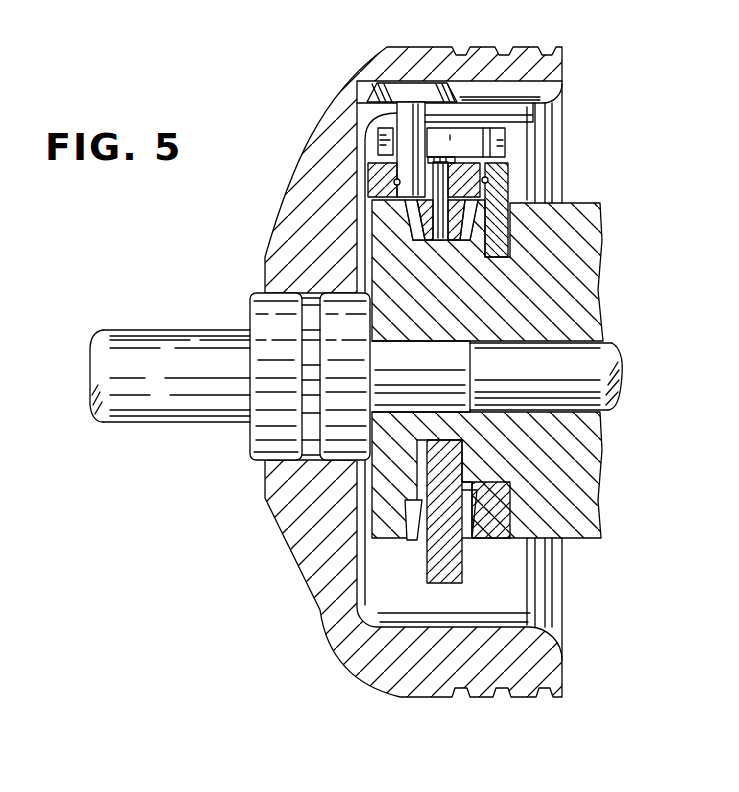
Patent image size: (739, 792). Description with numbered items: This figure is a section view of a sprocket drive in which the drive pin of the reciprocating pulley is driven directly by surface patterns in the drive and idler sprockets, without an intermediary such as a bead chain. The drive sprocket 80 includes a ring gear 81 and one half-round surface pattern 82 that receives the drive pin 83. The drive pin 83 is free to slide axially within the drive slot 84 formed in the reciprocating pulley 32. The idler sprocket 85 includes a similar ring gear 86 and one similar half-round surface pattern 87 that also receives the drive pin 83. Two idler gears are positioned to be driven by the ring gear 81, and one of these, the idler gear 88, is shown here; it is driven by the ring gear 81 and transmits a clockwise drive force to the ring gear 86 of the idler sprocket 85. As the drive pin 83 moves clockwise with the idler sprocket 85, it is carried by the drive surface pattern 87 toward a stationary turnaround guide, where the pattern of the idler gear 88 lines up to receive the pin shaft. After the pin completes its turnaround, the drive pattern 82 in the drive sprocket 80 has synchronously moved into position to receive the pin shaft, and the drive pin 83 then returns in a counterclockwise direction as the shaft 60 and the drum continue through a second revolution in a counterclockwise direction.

The reciprocating pulley 32 is at (420, 47).
The shaft 60 is at (172, 418).
The drive sprocket 80 is at (380, 263).
The ring gear 81 is at (413, 222).
The half-round surface pattern 82 is at (394, 181).
The drive pin 83 is at (397, 92).
The drive slot 84 is at (547, 90).
The idler sprocket 85 is at (512, 188).
The ring gear 86 is at (490, 226).
The half-round surface pattern 87 is at (510, 170).
The idler gear 88 is at (462, 210).